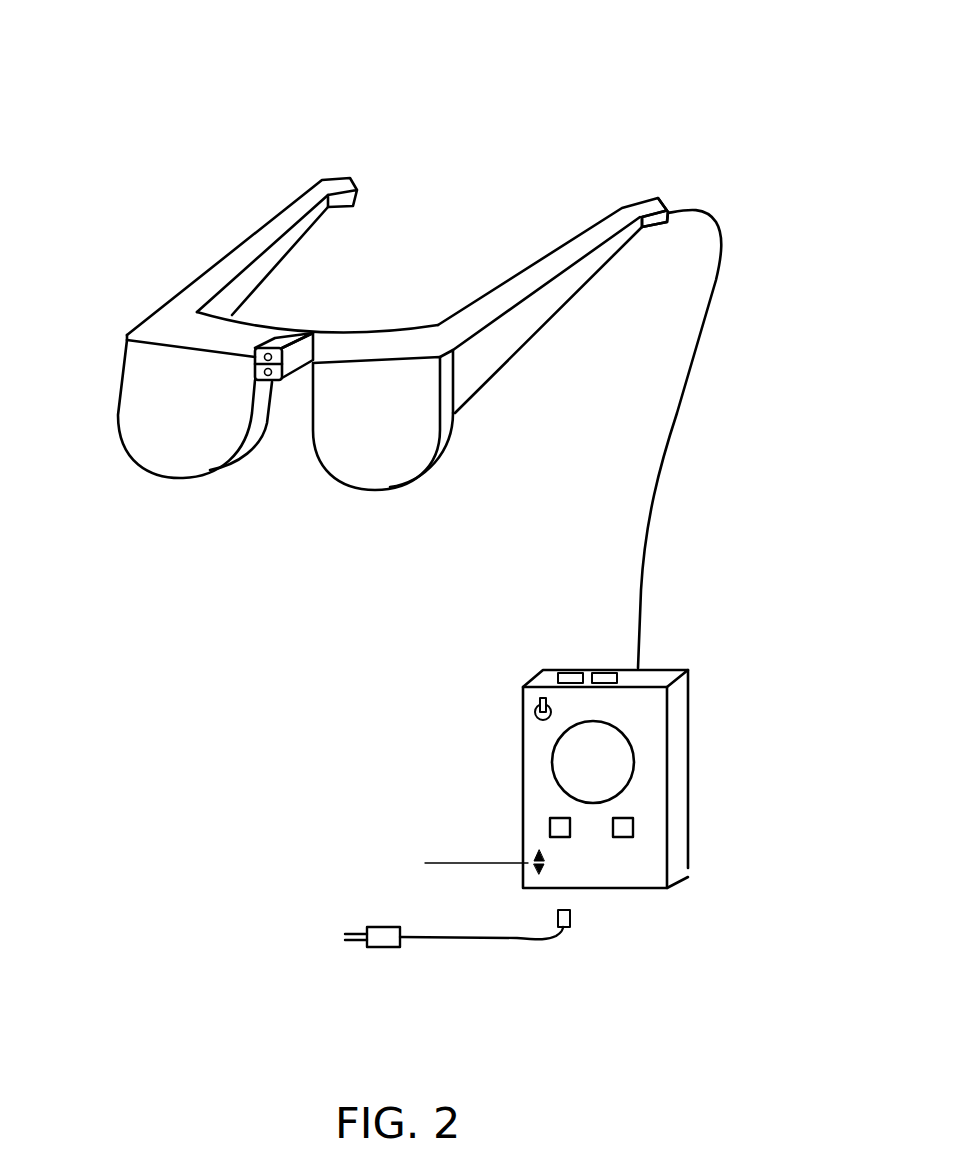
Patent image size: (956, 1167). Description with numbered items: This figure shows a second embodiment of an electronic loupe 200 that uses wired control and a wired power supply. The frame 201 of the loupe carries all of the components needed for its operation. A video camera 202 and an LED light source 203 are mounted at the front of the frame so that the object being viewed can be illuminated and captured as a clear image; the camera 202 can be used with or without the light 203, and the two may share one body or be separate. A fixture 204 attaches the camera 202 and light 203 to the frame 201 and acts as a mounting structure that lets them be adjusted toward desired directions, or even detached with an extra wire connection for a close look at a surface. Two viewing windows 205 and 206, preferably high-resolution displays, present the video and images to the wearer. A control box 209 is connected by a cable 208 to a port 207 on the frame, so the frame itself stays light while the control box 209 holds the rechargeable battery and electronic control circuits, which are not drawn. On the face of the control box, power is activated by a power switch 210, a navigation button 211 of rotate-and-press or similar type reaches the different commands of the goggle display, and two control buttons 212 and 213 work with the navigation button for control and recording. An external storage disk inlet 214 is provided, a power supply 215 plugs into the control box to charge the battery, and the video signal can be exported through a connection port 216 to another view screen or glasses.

The electronic loupe 200 is at (403, 105).
The frame 201 is at (170, 320).
The video camera 202 is at (270, 383).
The LED light source 203 is at (268, 347).
The fixture 204 is at (313, 333).
The viewing window 205 is at (375, 453).
The viewing window 206 is at (170, 432).
The port 207 is at (668, 210).
The cable 208 is at (677, 413).
The control box 209 is at (678, 765).
The power switch 210 is at (534, 712).
The navigation button 211 is at (560, 766).
The control button 212 is at (550, 828).
The control button 213 is at (633, 828).
The external storage disk inlet 214 is at (567, 673).
The power supply 215 is at (465, 937).
The connection port 216 is at (608, 672).